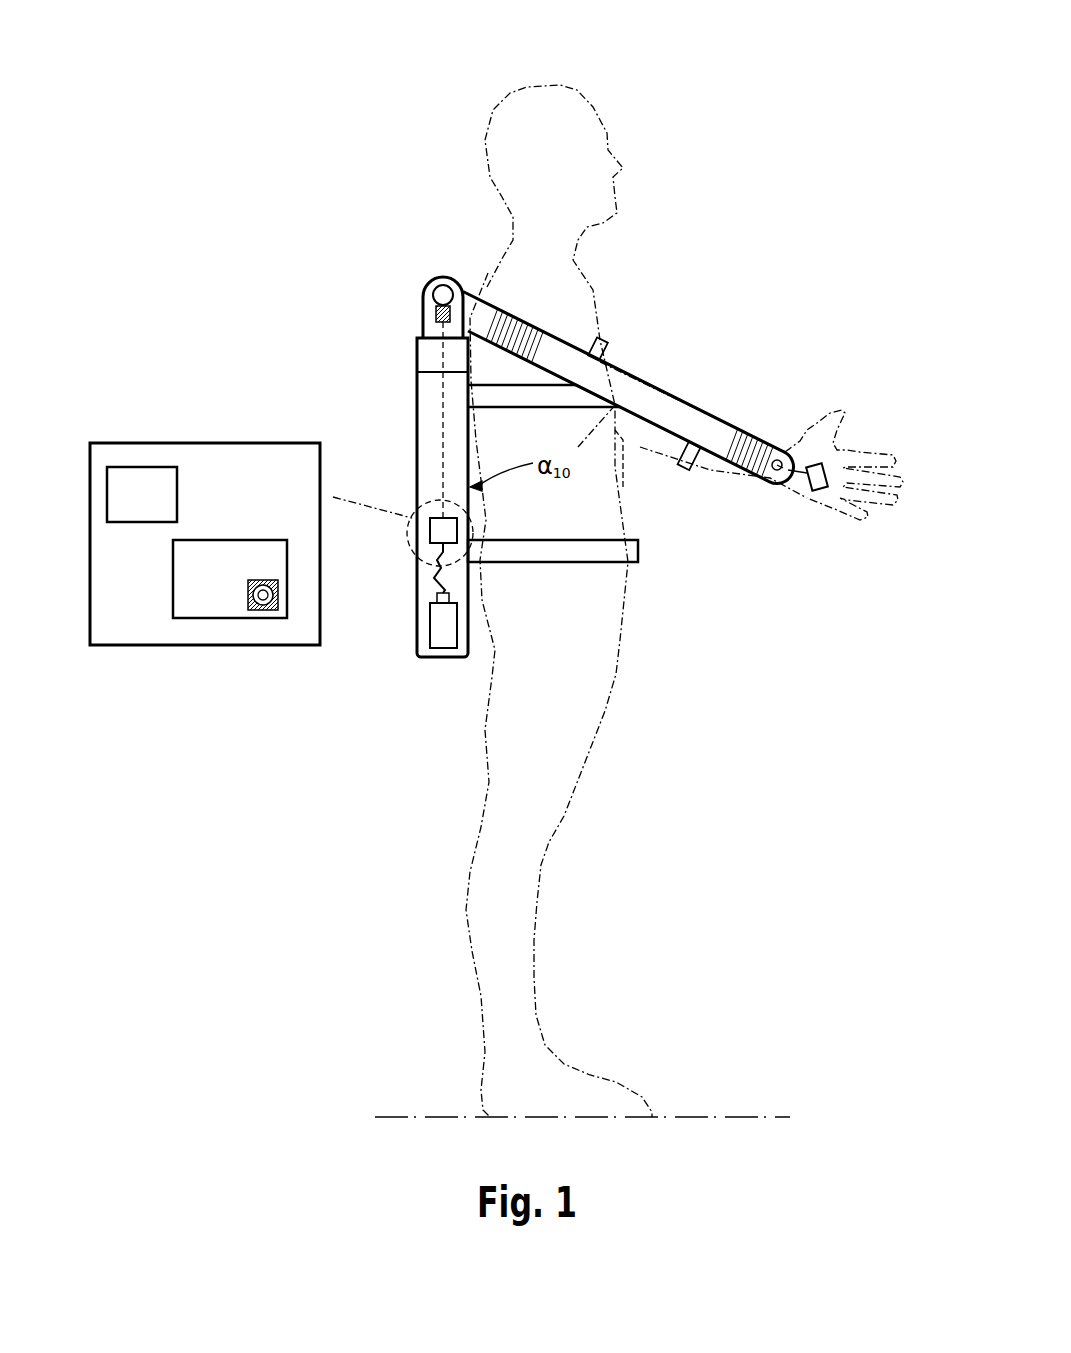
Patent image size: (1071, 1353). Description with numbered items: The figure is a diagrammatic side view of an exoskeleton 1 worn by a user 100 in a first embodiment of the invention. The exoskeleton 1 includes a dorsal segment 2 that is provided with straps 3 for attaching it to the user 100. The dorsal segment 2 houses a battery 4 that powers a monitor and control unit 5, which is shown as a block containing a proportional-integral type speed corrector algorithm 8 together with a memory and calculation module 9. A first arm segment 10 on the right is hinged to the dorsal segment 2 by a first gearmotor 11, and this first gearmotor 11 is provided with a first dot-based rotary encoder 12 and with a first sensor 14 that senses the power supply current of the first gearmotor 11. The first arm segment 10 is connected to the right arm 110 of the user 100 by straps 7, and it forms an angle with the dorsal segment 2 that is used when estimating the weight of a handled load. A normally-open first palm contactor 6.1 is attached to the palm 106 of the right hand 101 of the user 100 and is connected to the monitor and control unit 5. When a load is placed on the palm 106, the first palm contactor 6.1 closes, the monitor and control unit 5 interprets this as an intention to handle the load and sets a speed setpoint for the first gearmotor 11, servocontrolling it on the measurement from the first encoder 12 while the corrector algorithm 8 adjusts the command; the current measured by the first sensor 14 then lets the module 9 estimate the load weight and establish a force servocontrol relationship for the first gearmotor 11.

The user 100 is at (648, 64).
The exoskeleton 1 is at (622, 283).
The dorsal segment 2 is at (430, 392).
The straps 3 is at (497, 410).
The battery 4 is at (430, 627).
The monitor and control unit 5 is at (207, 443).
The first palm contactor 6.1 is at (812, 490).
The straps 7 is at (605, 342).
The proportional-integral type speed corrector algorithm 8 is at (107, 497).
The memory and calculation module 9 is at (207, 618).
The first arm segment 10 is at (537, 345).
The first gearmotor 11 is at (440, 283).
The first dot-based rotary encoder 12 is at (430, 296).
The first sensor 14 is at (436, 318).
The right hand 101 is at (848, 520).
The palm 106 is at (845, 452).
The right arm 110 is at (603, 464).